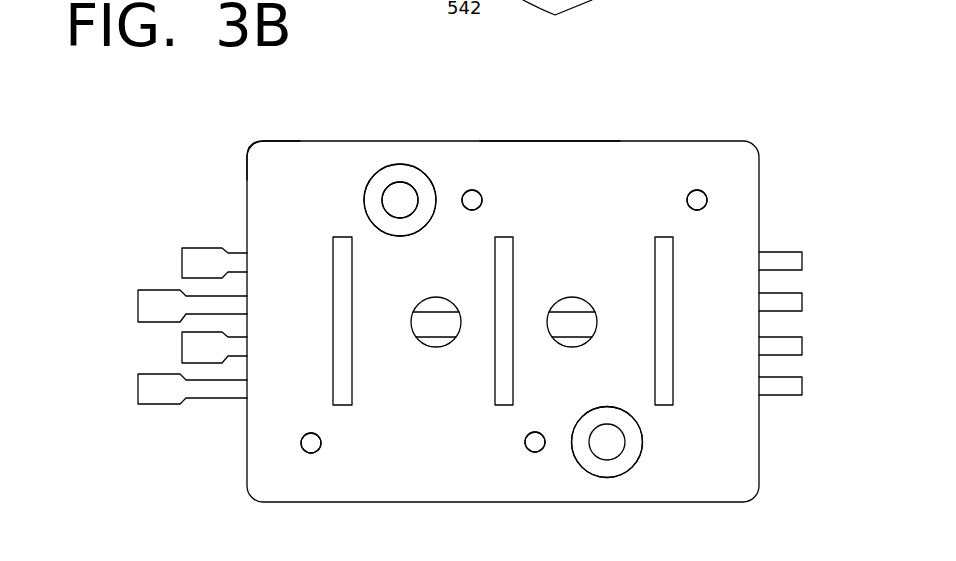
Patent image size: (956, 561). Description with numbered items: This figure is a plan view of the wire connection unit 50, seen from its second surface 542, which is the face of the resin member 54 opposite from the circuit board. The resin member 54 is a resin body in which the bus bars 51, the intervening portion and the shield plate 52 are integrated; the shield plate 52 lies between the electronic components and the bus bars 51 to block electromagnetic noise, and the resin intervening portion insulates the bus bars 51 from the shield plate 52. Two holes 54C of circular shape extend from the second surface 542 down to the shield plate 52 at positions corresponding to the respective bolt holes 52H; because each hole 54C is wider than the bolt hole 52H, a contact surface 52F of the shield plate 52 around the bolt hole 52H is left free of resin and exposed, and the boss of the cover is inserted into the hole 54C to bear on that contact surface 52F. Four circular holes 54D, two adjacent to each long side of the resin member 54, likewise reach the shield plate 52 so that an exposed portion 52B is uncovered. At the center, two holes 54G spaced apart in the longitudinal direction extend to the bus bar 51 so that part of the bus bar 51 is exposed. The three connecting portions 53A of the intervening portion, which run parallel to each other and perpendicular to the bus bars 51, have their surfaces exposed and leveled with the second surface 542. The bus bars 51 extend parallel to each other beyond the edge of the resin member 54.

The wire connection unit 50 is at (717, 123).
The bus bar 51 is at (802, 263).
The shield plate 52 is at (396, 225).
The exposed portion 52B is at (470, 209).
The contact surface 52F is at (420, 180).
The bolt hole 52H is at (385, 200).
The connecting portion 53A is at (338, 322).
The resin member 54 is at (277, 147).
The hole 54C is at (402, 172).
The circular hole 54D is at (478, 193).
The hole 54G is at (445, 300).
The second surface 542 is at (560, 147).